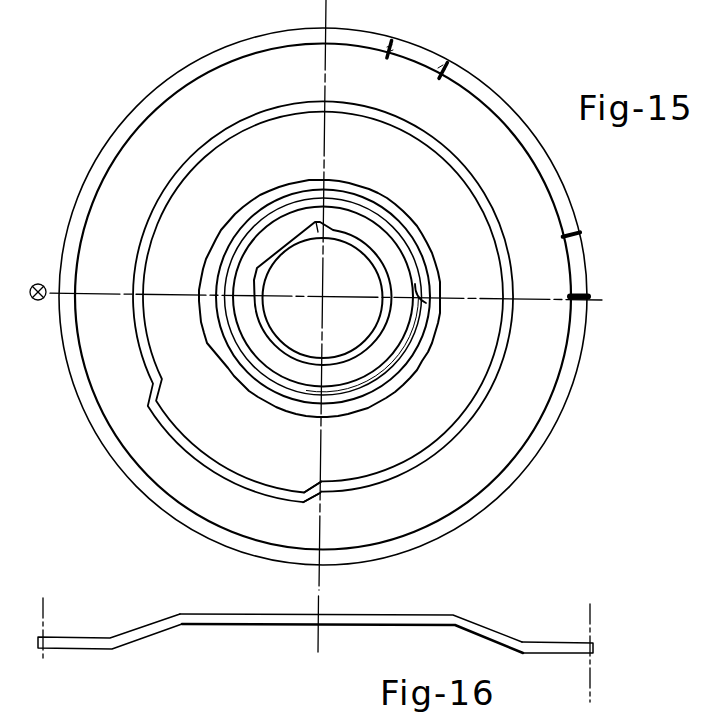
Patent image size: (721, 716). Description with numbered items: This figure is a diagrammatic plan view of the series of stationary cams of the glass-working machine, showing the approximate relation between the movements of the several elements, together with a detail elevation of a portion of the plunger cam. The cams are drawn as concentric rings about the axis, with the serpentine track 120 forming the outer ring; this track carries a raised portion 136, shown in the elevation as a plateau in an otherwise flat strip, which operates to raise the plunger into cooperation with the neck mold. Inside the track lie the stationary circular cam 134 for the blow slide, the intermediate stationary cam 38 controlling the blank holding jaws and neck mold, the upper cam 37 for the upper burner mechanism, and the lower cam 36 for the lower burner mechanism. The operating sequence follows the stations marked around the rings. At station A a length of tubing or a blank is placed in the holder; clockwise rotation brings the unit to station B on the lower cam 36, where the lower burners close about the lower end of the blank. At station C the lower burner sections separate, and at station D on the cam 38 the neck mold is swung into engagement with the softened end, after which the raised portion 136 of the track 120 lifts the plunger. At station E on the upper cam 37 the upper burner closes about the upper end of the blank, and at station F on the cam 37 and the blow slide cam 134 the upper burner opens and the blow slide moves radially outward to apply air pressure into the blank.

In FIG. 15, the serpentine track 120 is at (389, 42).
In FIG. 16, the serpentine track 120 is at (93, 640).
In FIG. 15, the raised portion 136 is at (475, 85).
In FIG. 16, the raised portion 136 is at (372, 618).
In FIG. 15, the stationary circular cam 134 is at (497, 391).
In FIG. 15, the lower cam 36 is at (270, 334).
In FIG. 15, the upper cam 37 is at (353, 391).
In FIG. 15, the intermediate stationary cam 38 is at (208, 345).
In FIG. 15, the station A is at (25, 295).
In FIG. 15, the station B is at (258, 268).
In FIG. 15, the station C is at (317, 226).
In FIG. 15, the station D is at (337, 178).
In FIG. 15, the station E is at (428, 304).
In FIG. 15, the station F is at (320, 398).